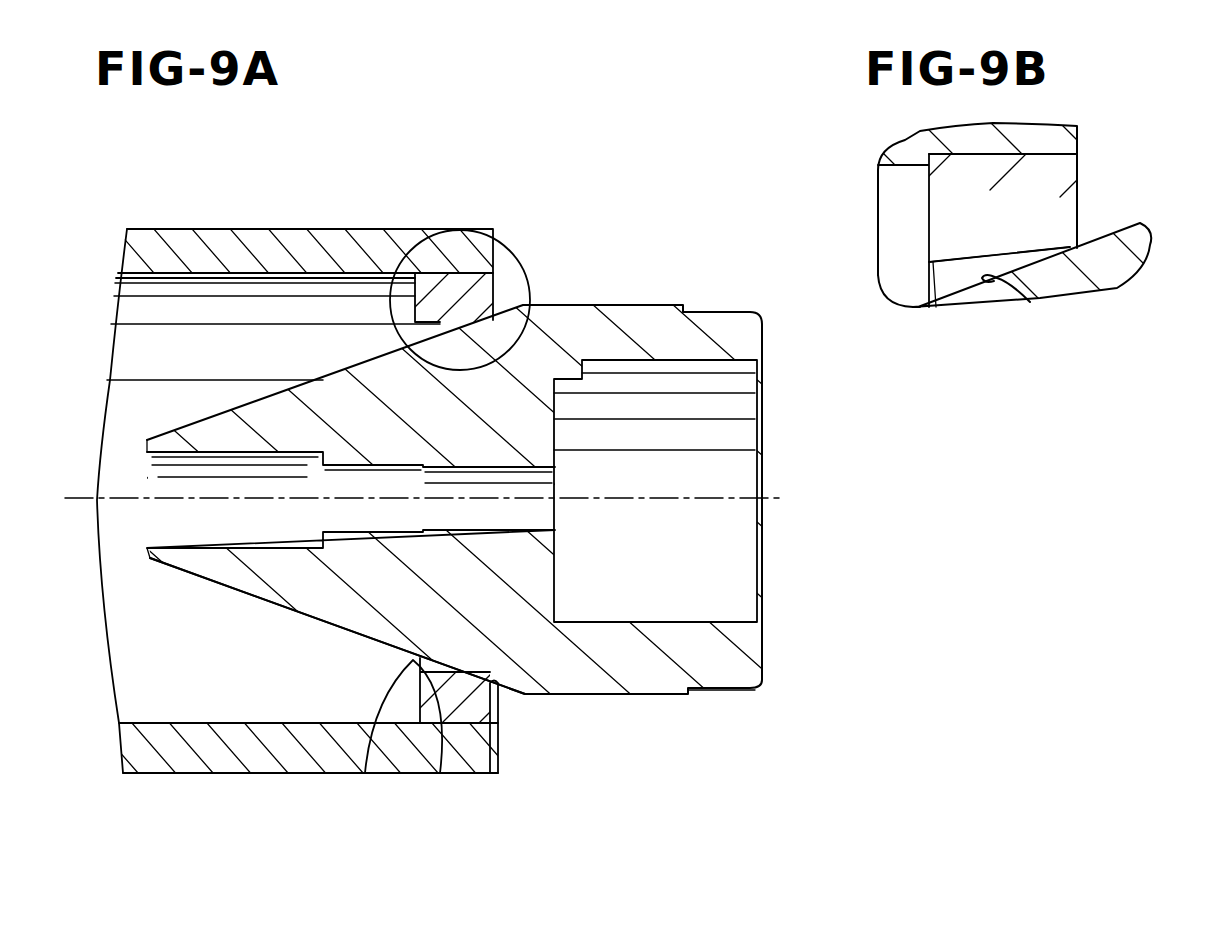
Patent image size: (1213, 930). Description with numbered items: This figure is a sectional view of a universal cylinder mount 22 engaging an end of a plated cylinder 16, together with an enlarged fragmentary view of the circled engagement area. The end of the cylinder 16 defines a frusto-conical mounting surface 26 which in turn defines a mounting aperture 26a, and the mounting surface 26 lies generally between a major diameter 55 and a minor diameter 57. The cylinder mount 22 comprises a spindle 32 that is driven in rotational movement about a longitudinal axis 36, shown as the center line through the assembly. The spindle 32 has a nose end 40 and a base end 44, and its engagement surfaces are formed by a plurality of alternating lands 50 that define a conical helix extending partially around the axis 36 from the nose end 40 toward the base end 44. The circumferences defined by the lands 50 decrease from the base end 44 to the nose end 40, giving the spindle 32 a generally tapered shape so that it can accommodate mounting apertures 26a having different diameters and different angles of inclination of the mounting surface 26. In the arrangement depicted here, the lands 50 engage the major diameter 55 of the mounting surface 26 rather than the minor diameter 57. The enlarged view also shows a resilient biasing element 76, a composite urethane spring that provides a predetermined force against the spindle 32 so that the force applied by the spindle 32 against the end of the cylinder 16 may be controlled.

In FIG. 9A, the plated cylinder 16 is at (173, 780).
In FIG. 9A, the universal cylinder mount 22 is at (612, 304).
In FIG. 9A, the mounting surface 26 is at (445, 330).
In FIG. 9B, the mounting surface 26 is at (958, 262).
In FIG. 9A, the mounting aperture 26a is at (365, 773).
In FIG. 9A, the spindle 32 is at (352, 640).
In FIG. 9B, the spindle 32 is at (1118, 230).
In FIG. 9A, the longitudinal axis 36 is at (767, 499).
In FIG. 9A, the nose end 40 is at (195, 423).
In FIG. 9A, the base end 44 is at (684, 308).
In FIG. 9B, the lands 50 is at (1030, 302).
In FIG. 9A, the major diameter 55 is at (495, 775).
In FIG. 9B, the major diameter 55 is at (1073, 247).
In FIG. 9A, the minor diameter 57 is at (437, 773).
In FIG. 9B, the minor diameter 57 is at (938, 308).
In FIG. 9B, the resilient biasing element 76 is at (1030, 130).